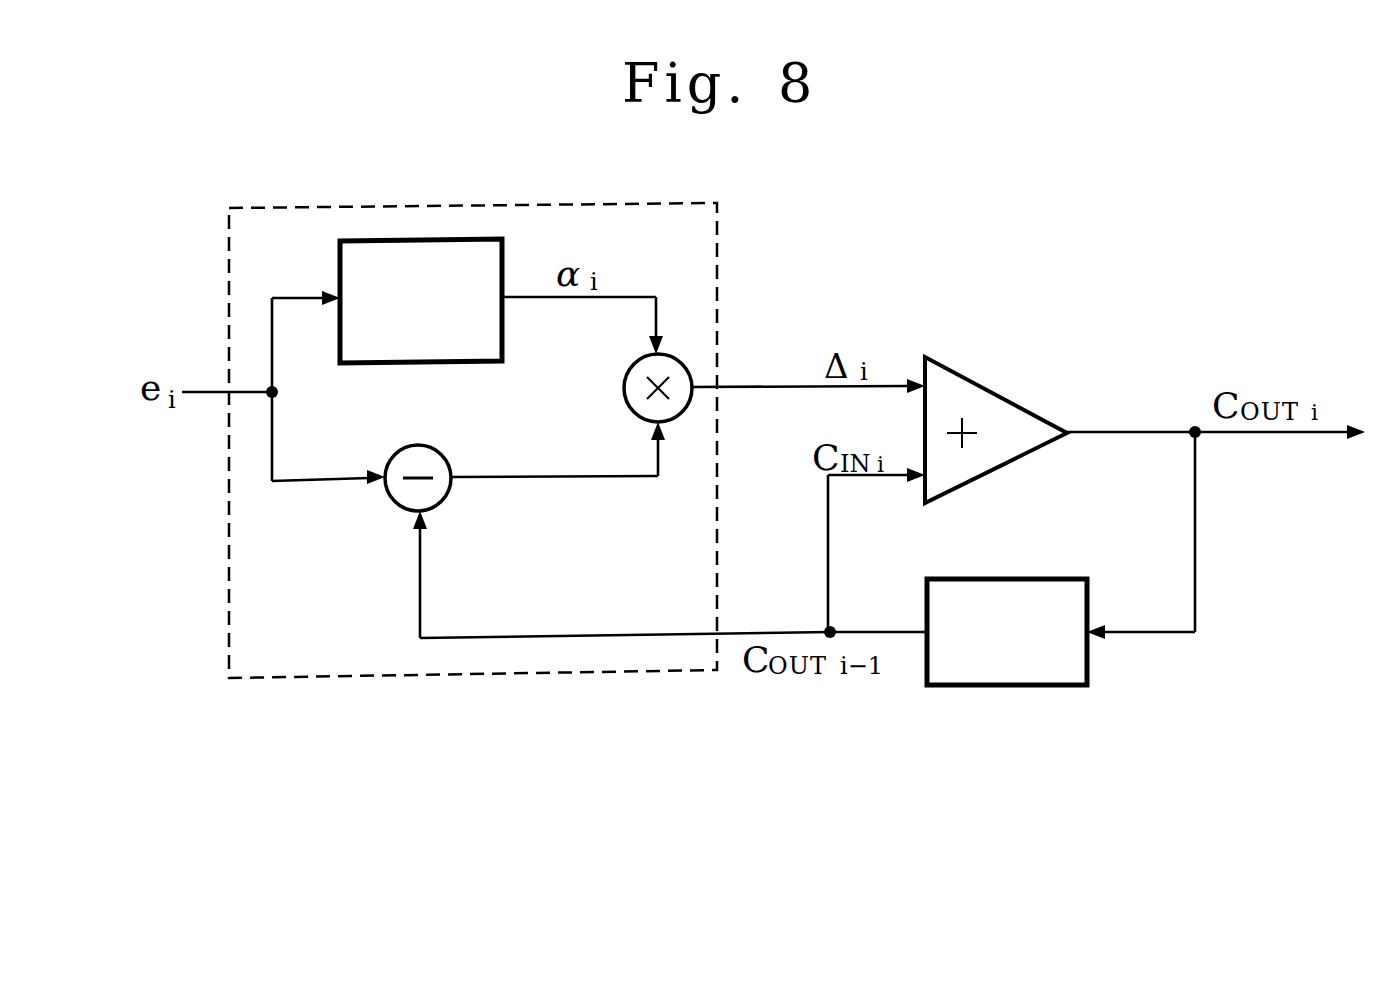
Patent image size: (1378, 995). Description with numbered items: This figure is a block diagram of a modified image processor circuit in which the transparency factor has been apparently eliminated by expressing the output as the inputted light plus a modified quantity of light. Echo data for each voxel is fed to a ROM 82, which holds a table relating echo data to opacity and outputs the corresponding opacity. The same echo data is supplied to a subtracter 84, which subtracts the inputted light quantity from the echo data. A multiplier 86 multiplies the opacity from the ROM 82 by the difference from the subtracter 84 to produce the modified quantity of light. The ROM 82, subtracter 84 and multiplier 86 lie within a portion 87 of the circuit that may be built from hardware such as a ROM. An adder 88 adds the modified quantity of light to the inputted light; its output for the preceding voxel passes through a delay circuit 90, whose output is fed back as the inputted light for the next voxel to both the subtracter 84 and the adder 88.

The ROM 82 is at (340, 262).
The subtracter 84 is at (447, 452).
The multiplier 86 is at (631, 366).
The portion of the circuit 87 is at (718, 231).
The adder 88 is at (987, 386).
The delay circuit 90 is at (1012, 687).